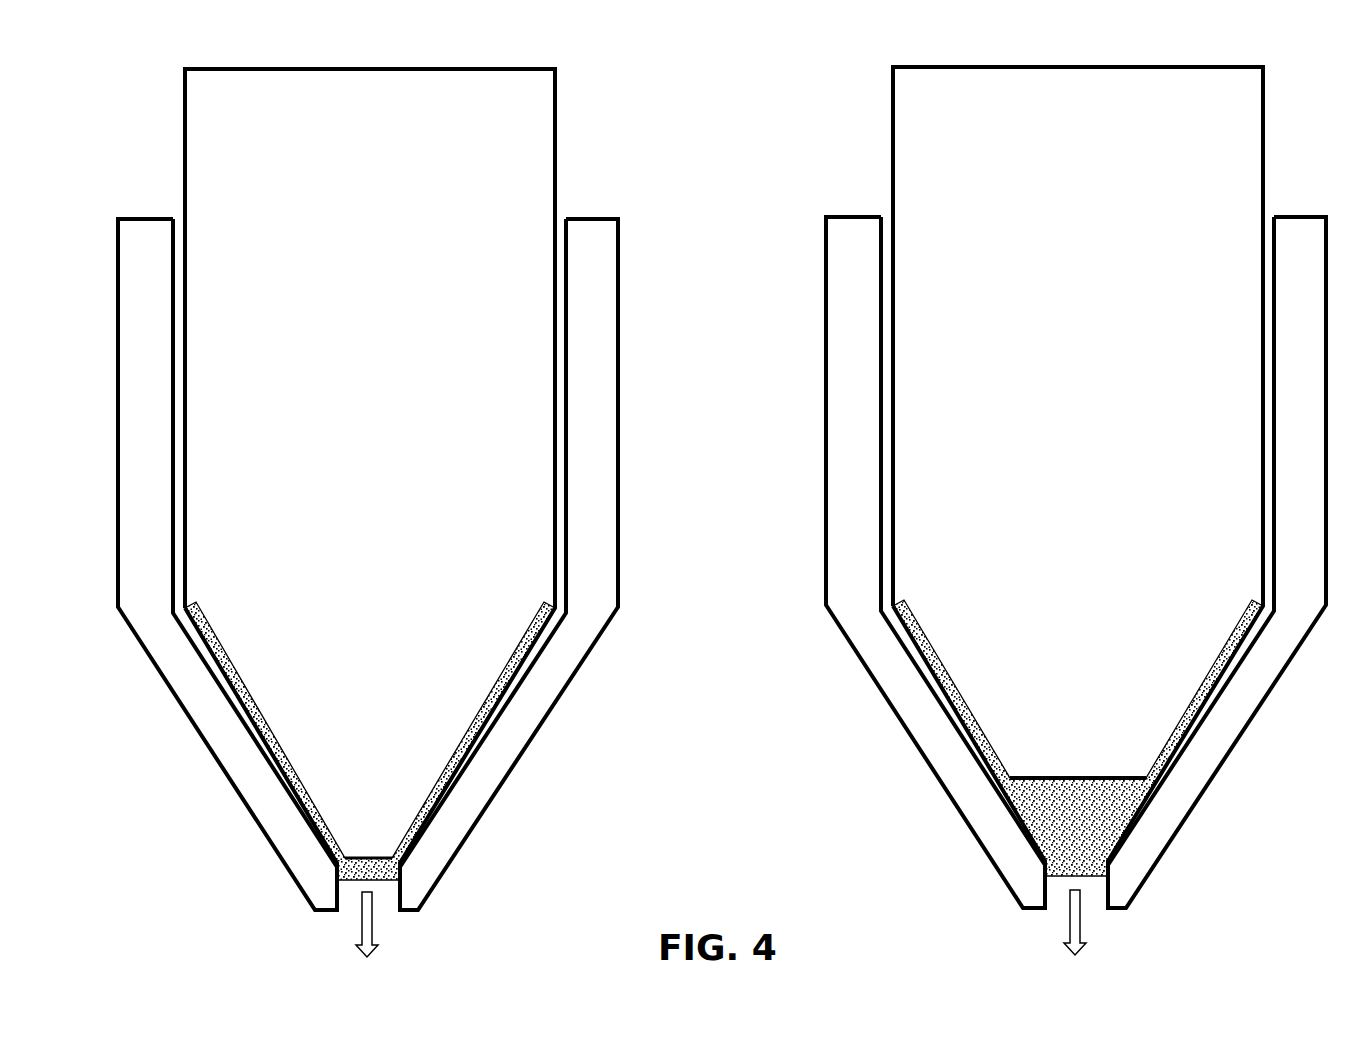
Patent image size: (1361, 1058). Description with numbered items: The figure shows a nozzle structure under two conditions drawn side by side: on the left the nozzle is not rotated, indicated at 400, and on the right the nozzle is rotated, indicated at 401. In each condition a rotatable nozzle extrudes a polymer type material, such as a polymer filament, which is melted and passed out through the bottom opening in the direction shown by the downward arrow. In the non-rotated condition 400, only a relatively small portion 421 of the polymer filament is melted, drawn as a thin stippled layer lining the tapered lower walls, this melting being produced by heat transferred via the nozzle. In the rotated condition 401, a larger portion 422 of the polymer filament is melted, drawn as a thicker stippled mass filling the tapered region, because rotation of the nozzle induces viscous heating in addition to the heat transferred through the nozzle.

The non-rotated nozzle condition 400 is at (399, 501).
The rotated nozzle condition 401 is at (1061, 497).
The relatively small melted portion of the polymer filament 421 is at (454, 773).
The larger melted portion of the polymer filament 422 is at (990, 771).